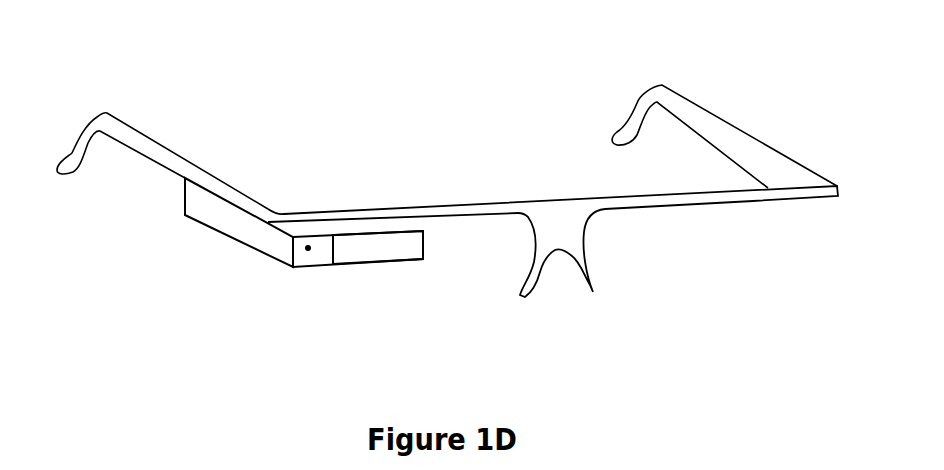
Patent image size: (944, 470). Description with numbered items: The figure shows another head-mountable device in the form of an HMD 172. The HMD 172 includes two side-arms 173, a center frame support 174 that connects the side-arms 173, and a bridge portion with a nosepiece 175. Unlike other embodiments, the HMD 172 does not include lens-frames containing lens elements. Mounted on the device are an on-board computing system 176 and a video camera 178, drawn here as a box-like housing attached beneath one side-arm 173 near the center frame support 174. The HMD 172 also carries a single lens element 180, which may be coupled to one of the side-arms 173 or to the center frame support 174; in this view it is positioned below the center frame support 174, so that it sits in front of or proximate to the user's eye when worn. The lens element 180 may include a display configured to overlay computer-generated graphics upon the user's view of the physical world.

The HMD 172 is at (266, 128).
The side-arms 173 is at (150, 151).
The center frame support 174 is at (465, 210).
The nosepiece 175 is at (577, 247).
The on-board computing system 176 is at (221, 232).
The video camera 178 is at (308, 249).
The single lens element 180 is at (380, 262).